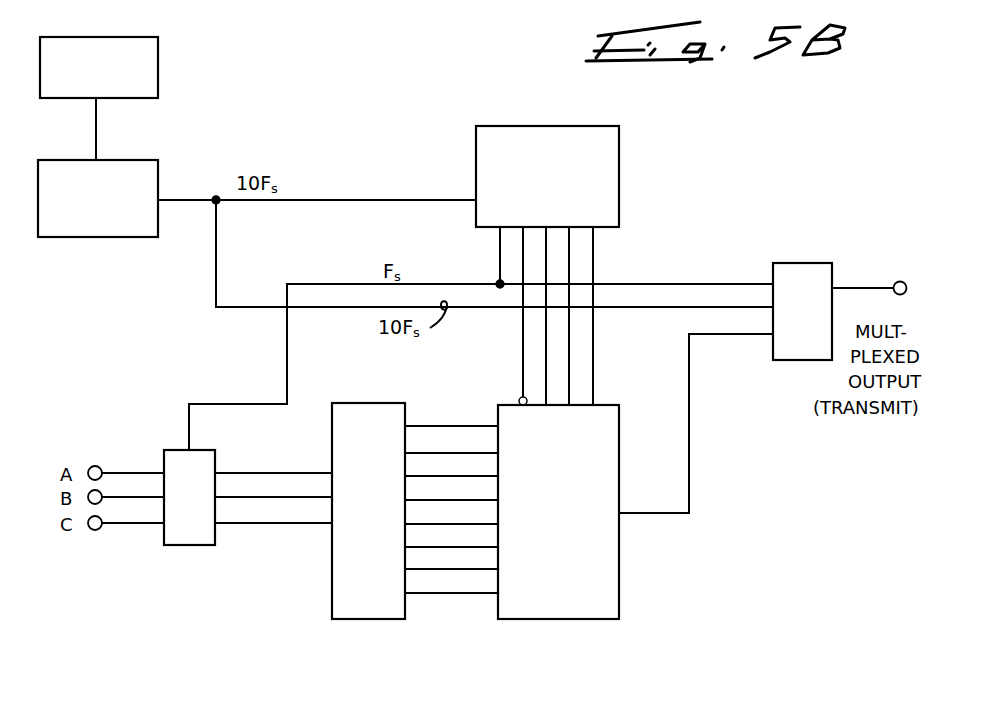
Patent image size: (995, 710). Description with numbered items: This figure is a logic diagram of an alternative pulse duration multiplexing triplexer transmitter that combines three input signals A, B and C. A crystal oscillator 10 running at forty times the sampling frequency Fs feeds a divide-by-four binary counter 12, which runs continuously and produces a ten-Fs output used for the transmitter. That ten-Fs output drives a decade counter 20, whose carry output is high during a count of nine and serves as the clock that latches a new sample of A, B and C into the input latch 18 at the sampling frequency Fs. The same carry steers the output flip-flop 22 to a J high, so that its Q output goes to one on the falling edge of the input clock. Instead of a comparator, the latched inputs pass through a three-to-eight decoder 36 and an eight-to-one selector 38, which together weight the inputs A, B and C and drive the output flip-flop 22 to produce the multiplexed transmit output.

The crystal oscillator 10 is at (99, 53).
The divide-by-four binary counter 12 is at (98, 184).
The input latch 18 is at (189, 513).
The decade counter 20 is at (547, 164).
The output flip-flop 22 is at (802, 299).
The 3 to 8 decoder 36 is at (368, 528).
The 8 to 1 selector 38 is at (558, 530).